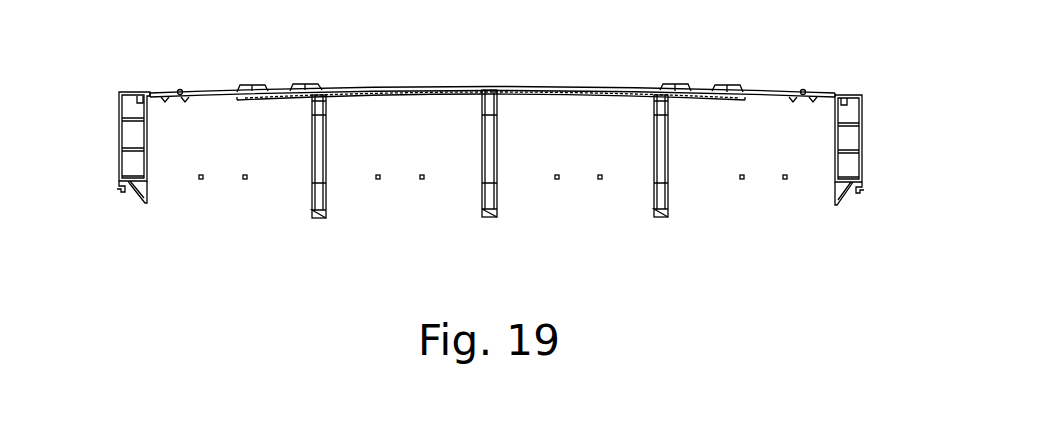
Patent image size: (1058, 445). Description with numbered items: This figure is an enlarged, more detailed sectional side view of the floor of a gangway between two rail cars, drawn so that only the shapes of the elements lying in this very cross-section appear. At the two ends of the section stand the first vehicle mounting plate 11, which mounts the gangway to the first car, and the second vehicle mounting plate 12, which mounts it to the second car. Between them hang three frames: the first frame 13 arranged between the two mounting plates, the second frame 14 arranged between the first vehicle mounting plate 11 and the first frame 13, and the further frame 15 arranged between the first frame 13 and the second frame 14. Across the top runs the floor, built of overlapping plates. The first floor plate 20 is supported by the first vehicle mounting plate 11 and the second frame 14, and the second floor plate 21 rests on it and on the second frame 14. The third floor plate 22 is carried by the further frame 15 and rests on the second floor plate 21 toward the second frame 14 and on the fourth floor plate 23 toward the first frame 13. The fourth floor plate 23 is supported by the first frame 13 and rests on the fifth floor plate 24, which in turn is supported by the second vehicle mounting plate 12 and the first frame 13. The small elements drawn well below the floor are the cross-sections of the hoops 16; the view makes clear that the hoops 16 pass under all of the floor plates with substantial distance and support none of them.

The first vehicle mounting plate 11 is at (855, 135).
The second vehicle mounting plate 12 is at (125, 137).
The first frame 13 is at (316, 219).
The second frame 14 is at (661, 218).
The further frame 15 is at (488, 218).
The hoops 16 is at (201, 180).
The first floor plate 20 is at (778, 91).
The second floor plate 21 is at (705, 90).
The third floor plate 22 is at (478, 86).
The fourth floor plate 23 is at (273, 90).
The fifth floor plate 24 is at (208, 91).